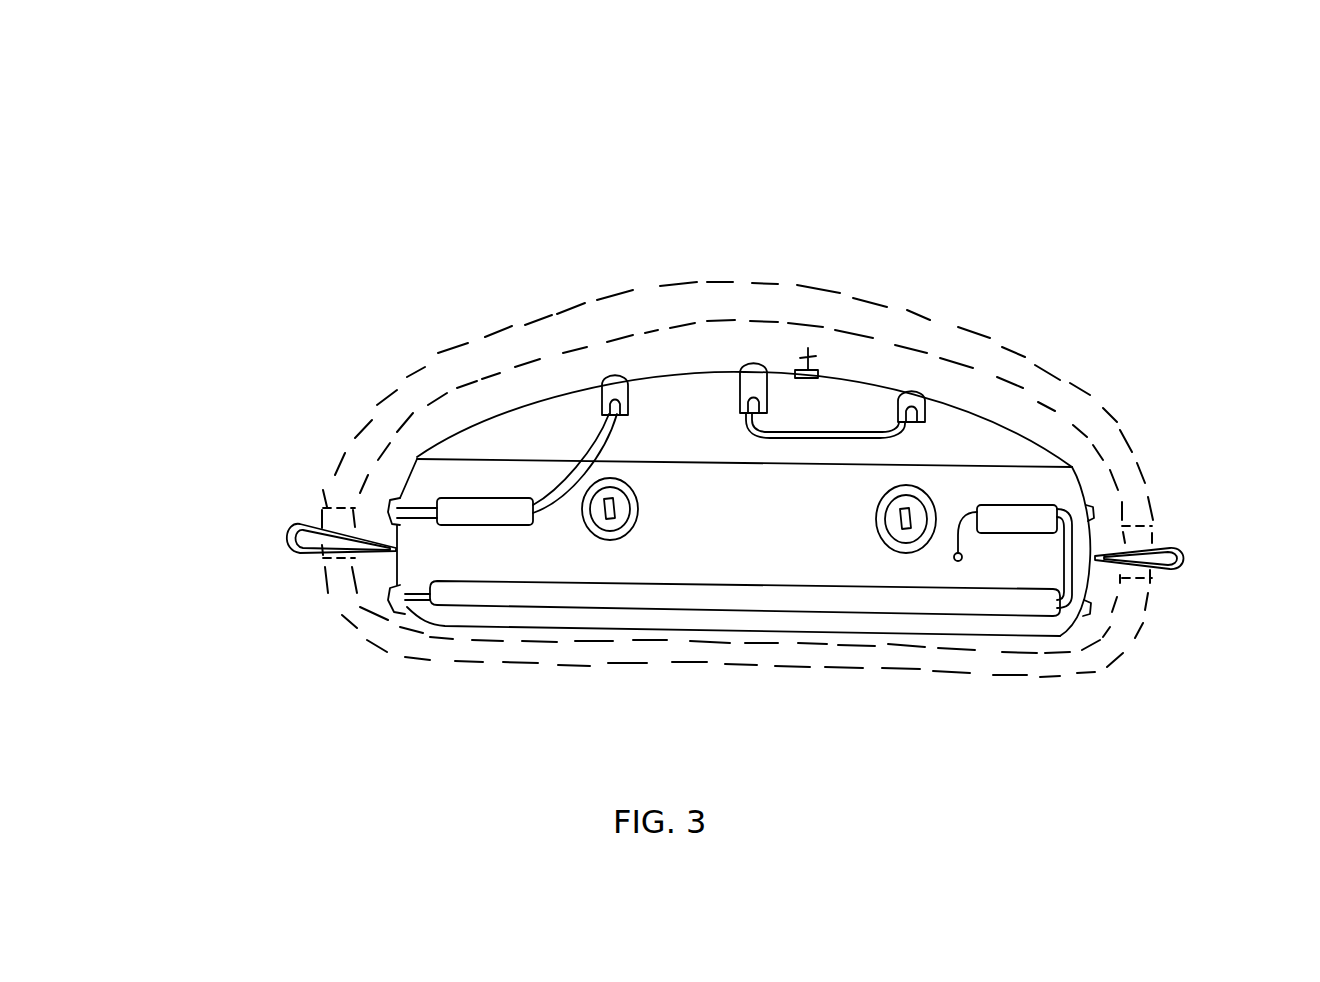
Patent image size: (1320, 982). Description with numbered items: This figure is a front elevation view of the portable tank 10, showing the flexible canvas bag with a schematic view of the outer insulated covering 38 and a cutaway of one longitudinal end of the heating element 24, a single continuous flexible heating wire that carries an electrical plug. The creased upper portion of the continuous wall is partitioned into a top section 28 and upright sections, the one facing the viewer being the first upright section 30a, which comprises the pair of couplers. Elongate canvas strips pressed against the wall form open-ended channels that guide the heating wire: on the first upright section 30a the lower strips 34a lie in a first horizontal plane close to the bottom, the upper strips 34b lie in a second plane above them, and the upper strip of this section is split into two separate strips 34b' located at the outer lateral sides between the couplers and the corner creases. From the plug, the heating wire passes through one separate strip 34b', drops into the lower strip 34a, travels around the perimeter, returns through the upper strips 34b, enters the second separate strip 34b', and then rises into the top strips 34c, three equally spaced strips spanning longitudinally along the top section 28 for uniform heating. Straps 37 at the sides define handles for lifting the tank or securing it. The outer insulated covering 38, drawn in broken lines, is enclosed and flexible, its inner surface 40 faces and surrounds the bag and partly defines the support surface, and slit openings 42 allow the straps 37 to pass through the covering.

The therapeutic device assembly 10 is at (1038, 155).
The heating element 24 is at (993, 557).
The top section 28 is at (548, 427).
The first upright section 30a is at (765, 550).
The lower strips 34a is at (393, 587).
The upper strips 34b is at (725, 533).
The separate strips 34b' is at (757, 445).
The top strips 34c is at (610, 372).
The straps 37 is at (264, 551).
The outer insulated covering 38 is at (1063, 345).
The inner surface 40 is at (1055, 406).
The openings 42 is at (324, 508).